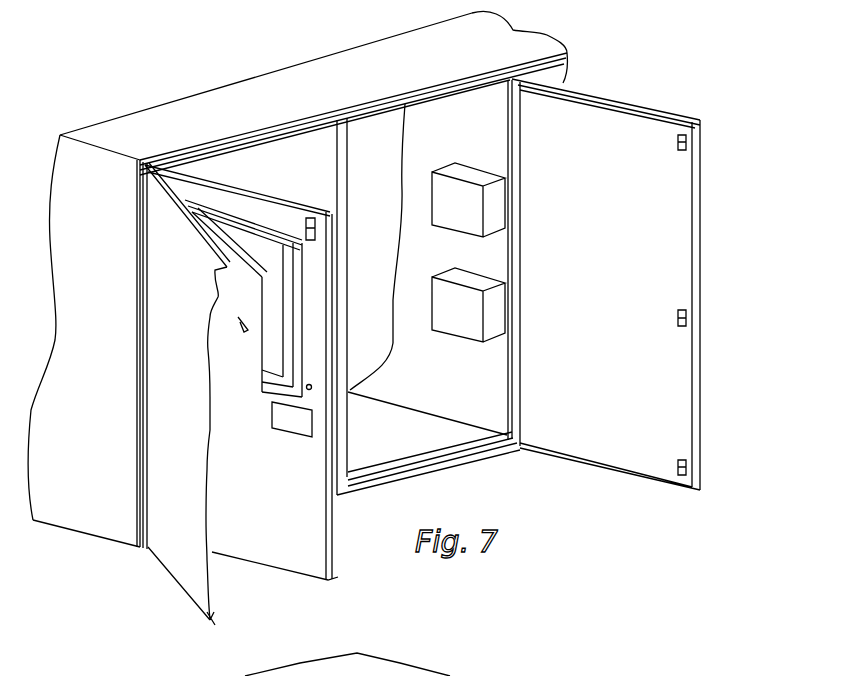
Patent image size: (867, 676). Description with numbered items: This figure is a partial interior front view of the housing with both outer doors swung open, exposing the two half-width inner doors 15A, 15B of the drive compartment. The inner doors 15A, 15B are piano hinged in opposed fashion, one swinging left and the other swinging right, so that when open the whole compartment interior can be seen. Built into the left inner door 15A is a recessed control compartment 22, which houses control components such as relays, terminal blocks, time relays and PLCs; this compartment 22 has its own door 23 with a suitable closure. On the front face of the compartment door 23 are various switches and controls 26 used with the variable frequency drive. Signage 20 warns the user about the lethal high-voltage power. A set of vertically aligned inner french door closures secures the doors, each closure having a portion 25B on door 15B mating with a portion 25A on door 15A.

The left inner door 15A is at (241, 394).
The right inner door 15B is at (606, 284).
The signage 20 is at (293, 430).
The recessed control compartment 22 is at (276, 222).
The compartment door 23 is at (249, 338).
The french door closure portion 25A is at (310, 215).
The french door closure portion 25B is at (687, 142).
The switches and controls 26 is at (687, 320).